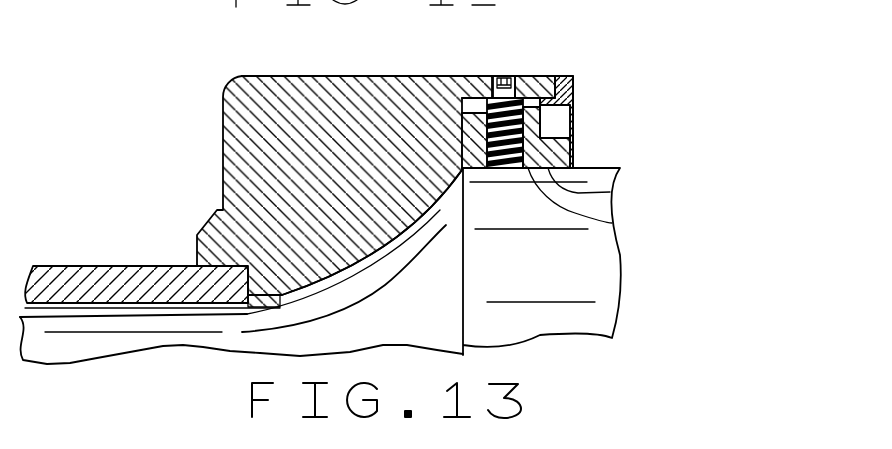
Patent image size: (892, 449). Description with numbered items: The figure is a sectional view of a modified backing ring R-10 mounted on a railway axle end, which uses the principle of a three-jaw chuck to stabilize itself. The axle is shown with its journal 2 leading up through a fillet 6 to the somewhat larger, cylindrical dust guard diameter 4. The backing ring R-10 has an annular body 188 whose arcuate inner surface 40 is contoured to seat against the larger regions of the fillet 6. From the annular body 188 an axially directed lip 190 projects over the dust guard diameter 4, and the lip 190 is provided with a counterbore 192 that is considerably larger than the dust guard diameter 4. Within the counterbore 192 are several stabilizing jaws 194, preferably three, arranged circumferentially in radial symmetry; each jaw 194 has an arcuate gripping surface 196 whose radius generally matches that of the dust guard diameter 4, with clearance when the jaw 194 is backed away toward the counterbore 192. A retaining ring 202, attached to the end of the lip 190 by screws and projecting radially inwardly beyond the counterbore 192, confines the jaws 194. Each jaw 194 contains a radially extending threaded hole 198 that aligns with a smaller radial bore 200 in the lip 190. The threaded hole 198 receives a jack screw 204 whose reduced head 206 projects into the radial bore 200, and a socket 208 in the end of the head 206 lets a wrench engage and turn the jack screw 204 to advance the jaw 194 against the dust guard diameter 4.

The backing ring R-10 is at (647, 46).
The annular body 188 is at (329, 90).
The axially directed lip 190 is at (437, 86).
The arcuate inner surface 40 is at (433, 212).
The reduced head 206 is at (515, 75).
The socket 208 is at (502, 74).
The radial bore 200 is at (528, 75).
The retaining ring 202 is at (576, 78).
The counterbore 192 is at (576, 107).
The stabilizing jaws 194 is at (575, 142).
The threaded hole 198 is at (505, 170).
The dust guard diameter 4 is at (600, 257).
The arcuate gripping surface 196 is at (622, 188).
The jack screw 204 is at (613, 222).
The journal 2 is at (72, 352).
The fillet 6 is at (430, 318).